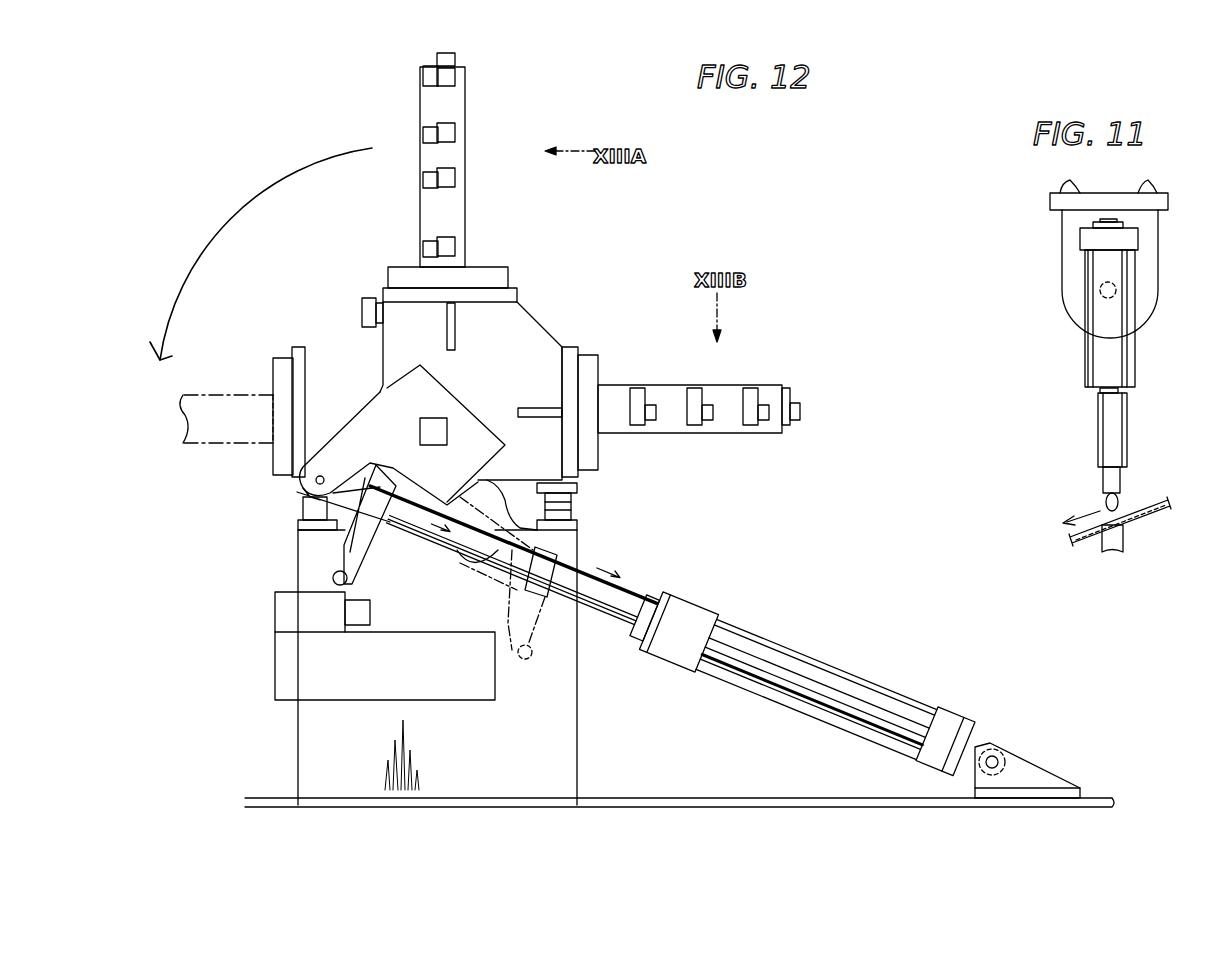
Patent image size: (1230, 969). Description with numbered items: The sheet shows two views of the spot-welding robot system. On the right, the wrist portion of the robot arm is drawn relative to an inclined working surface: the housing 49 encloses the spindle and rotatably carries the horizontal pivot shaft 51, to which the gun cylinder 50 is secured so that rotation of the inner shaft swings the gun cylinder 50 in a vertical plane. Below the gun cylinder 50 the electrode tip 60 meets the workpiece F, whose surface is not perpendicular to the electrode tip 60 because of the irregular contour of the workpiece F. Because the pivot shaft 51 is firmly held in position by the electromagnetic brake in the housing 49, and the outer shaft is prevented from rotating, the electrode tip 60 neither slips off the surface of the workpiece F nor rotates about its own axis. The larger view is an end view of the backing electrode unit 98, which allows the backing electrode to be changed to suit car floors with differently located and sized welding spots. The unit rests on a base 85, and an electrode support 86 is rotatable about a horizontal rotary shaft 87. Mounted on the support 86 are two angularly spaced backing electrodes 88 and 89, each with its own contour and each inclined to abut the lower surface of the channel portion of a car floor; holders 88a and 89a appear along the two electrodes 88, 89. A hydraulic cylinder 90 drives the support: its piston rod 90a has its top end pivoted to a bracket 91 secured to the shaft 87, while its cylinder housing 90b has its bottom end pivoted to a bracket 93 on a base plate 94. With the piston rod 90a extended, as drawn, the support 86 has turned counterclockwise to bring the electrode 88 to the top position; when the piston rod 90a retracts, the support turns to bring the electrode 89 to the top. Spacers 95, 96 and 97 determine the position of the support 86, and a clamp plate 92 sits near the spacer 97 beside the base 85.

In FIG. 12, the backing electrode 88 is at (427, 107).
In FIG. 12, the tool holders on magazine 88a is at (457, 80).
In FIG. 12, the electrode support 86 is at (533, 328).
In FIG. 12, the spacer 95 is at (364, 310).
In FIG. 12, the bracket 91 is at (365, 428).
In FIG. 12, the horizontal rotary shaft 87 is at (440, 423).
In FIG. 12, the backing electrode 89 is at (670, 395).
In FIG. 12, the tool holders on arm 89a is at (700, 430).
In FIG. 12, the spacer 96 is at (568, 498).
In FIG. 12, the spacer 97 is at (568, 522).
In FIG. 12, the clamp plate 92 is at (308, 486).
In FIG. 12, the base 85 is at (577, 727).
In FIG. 12, the base plate 94 is at (775, 806).
In FIG. 12, the hydraulic cylinder 90 is at (716, 603).
In FIG. 12, the piston rod 90a is at (627, 612).
In FIG. 12, the cylinder housing 90b is at (808, 670).
In FIG. 12, the bracket 93 is at (1022, 766).
In FIG. 12, the backing electrode unit 98 is at (607, 258).
In FIG. 11, the backing electrode unit 98 is at (1123, 537).
In FIG. 11, the housing 49 is at (1148, 270).
In FIG. 11, the gun cylinder 50 is at (1120, 364).
In FIG. 11, the pivot shaft 51 is at (1100, 290).
In FIG. 11, the electrode tip 60 is at (1106, 502).
In FIG. 11, the workpiece F is at (1156, 506).